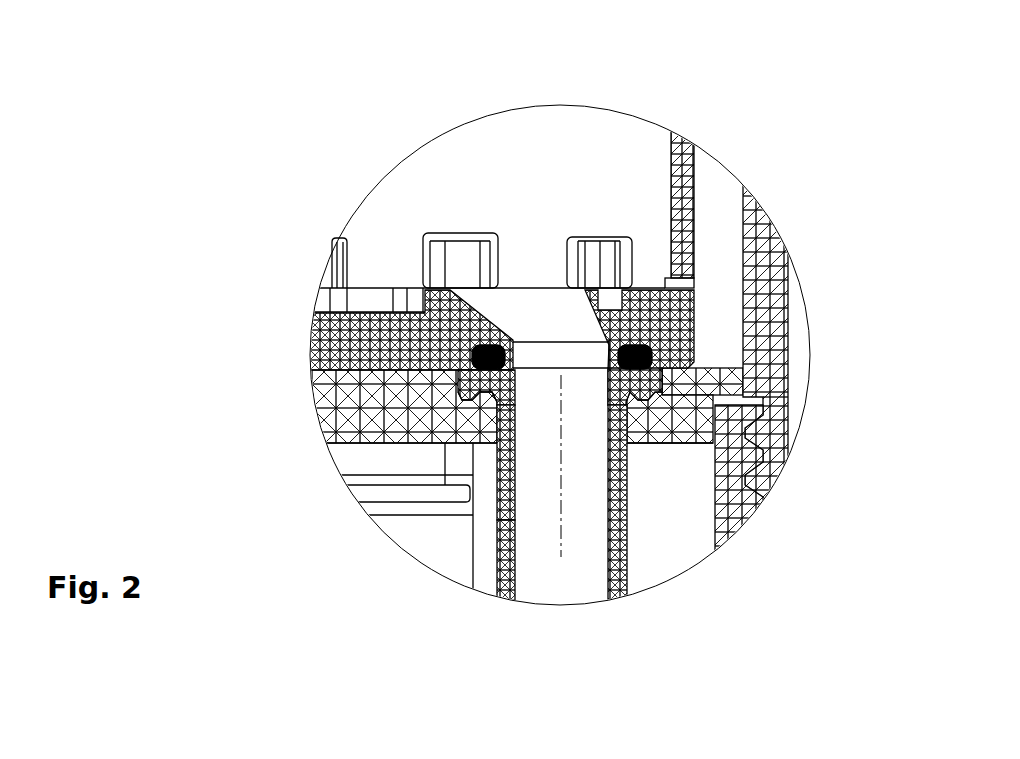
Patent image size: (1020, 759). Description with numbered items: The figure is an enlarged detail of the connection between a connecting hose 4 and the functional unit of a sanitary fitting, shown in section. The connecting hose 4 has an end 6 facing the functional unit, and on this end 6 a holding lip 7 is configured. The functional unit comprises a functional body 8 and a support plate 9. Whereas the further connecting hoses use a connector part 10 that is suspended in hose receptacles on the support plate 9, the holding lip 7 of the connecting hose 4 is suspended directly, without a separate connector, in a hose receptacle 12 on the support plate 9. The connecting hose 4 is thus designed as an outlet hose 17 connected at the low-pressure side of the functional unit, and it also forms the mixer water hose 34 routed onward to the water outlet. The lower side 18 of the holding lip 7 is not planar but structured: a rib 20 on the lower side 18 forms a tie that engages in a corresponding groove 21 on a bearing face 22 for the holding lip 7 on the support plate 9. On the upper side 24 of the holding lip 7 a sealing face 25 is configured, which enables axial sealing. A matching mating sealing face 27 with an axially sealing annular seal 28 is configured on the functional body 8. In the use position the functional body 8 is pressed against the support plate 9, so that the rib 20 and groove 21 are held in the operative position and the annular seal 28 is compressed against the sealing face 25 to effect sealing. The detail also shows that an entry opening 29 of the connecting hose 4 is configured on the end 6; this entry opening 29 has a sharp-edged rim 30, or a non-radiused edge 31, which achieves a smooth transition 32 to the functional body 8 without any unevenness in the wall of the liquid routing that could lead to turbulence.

The connecting hose 4 is at (613, 513).
The end 6 is at (422, 393).
The holding lip 7 is at (467, 378).
The functional body 8 is at (681, 217).
The support plate 9 is at (343, 398).
The connector part 10 is at (423, 528).
The hose receptacle 12 is at (500, 468).
The outlet hose 17 is at (439, 611).
The lower side 18 is at (473, 412).
The rib 20 is at (661, 393).
The groove 21 is at (661, 405).
The bearing face 22 is at (654, 376).
The upper side 24 is at (502, 328).
The sealing face 25 is at (472, 397).
The mating sealing face 27 is at (627, 393).
The annular seal 28 is at (477, 343).
The entry opening 29 is at (548, 358).
The sharp-edged rim 30 is at (567, 544).
The non-radiused edge 31 is at (603, 370).
The smooth transition 32 is at (596, 362).
The mixer water hose 34 is at (500, 575).